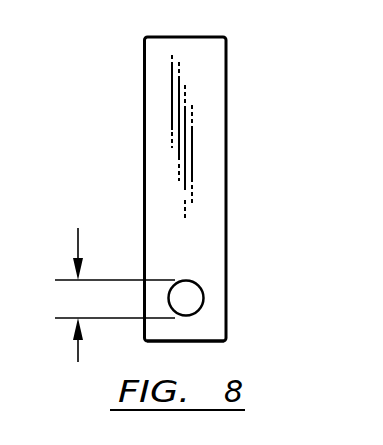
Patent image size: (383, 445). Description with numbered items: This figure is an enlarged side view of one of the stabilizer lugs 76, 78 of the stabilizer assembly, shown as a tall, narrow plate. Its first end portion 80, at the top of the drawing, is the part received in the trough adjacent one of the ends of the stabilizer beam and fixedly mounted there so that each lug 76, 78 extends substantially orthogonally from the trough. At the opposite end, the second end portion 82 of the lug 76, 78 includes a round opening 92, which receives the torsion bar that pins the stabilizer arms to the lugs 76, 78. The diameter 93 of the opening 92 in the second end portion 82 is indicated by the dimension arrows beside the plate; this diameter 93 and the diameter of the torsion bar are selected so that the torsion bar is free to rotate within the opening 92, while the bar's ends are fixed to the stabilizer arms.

The first stabilizer lug 76 is at (226, 189).
The second stabilizer lug 78 is at (213, 105).
The first end portion 80 is at (157, 56).
The second end portion 82 is at (212, 331).
The opening 92 is at (204, 300).
The diameter 93 is at (78, 236).